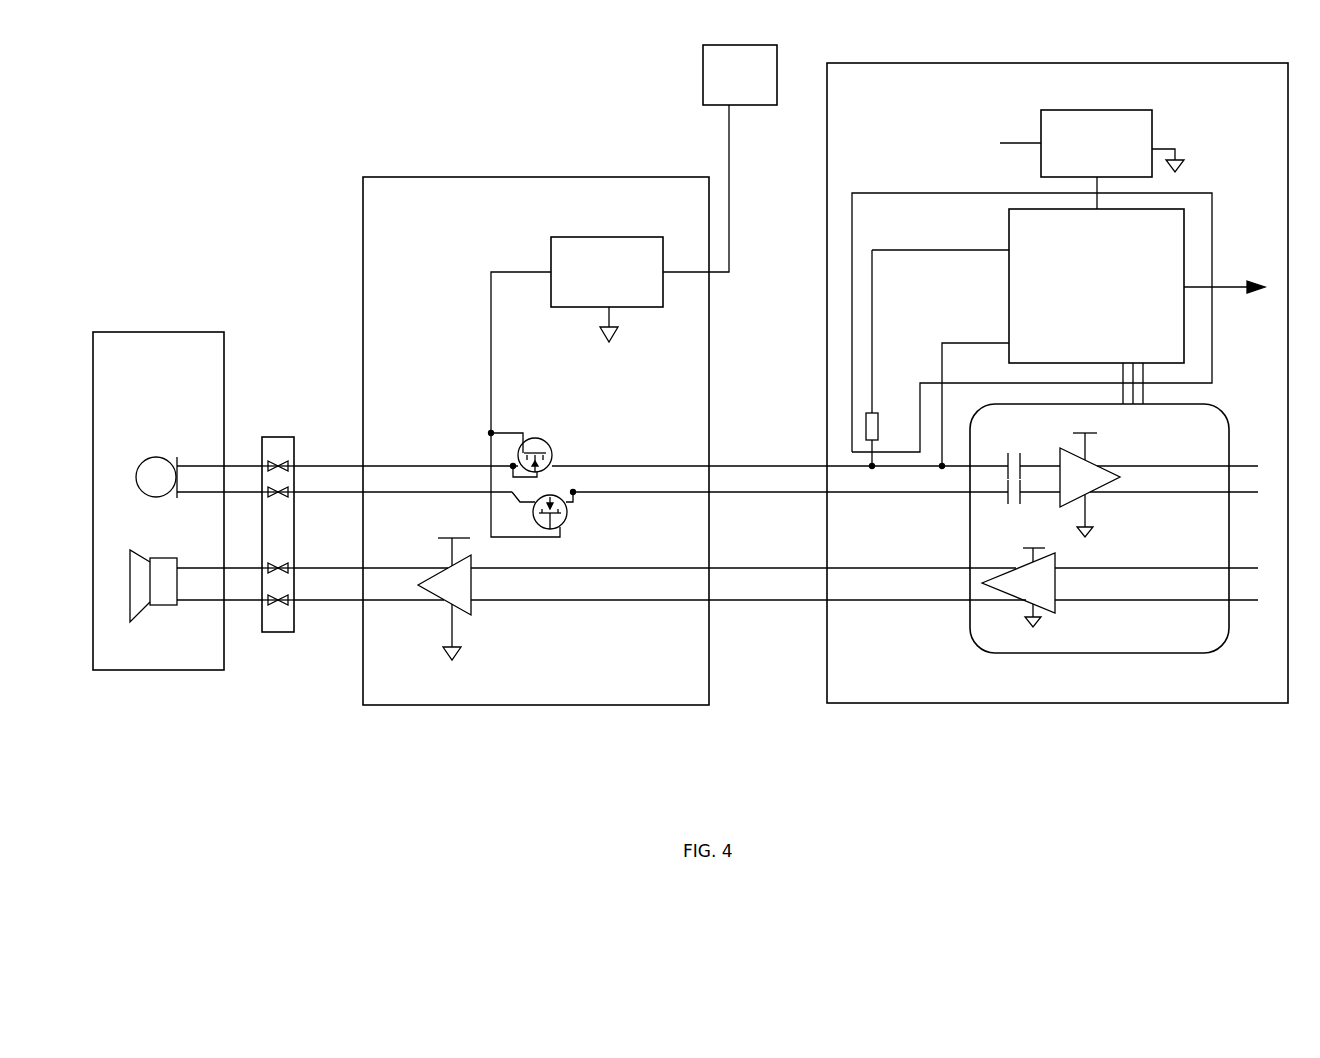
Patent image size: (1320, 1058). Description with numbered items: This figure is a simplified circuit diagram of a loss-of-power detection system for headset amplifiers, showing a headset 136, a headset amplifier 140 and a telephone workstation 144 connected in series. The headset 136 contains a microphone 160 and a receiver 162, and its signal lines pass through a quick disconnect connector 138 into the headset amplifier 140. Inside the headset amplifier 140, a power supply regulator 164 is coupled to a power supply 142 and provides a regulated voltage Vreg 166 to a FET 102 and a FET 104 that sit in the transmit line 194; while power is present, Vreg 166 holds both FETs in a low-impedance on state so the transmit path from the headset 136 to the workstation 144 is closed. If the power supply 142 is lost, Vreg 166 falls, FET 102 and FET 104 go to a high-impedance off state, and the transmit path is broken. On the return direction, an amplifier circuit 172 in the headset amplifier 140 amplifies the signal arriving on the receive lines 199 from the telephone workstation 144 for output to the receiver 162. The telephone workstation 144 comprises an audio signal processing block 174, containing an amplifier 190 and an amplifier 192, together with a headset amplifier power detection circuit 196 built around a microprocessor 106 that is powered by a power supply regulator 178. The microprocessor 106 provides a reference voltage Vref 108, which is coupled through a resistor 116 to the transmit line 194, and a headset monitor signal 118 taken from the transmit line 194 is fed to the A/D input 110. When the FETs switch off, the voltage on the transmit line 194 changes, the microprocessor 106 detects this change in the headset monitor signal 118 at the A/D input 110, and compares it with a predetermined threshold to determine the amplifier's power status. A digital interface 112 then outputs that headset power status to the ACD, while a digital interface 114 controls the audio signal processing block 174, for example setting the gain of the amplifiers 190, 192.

The headset 136 is at (158, 501).
The quick disconnect connector 138 is at (291, 507).
The headset amplifier 140 is at (536, 441).
The power supply 142 is at (720, 158).
The telephone workstation 144 is at (1057, 383).
The microphone 160 is at (197, 466).
The receiver 162 is at (191, 576).
The power supply regulator 164 is at (607, 289).
The regulated voltage Vreg 166 is at (525, 395).
The amplifier circuit 172 is at (444, 591).
The audio signal processing block 174 is at (1225, 640).
The power supply regulator 178 is at (1089, 159).
The amplifier 190 is at (1159, 479).
The amplifier 192 is at (1120, 581).
The transmit line 194 is at (651, 467).
The receiver signal line 199 is at (660, 575).
The FET 102 is at (528, 446).
The FET 104 is at (555, 515).
The microprocessor 106 is at (1096, 286).
The reference voltage Vref 108 is at (959, 324).
The A/D input 110 is at (1053, 342).
The digital interface 112 is at (1198, 295).
The digital interface 114 is at (1141, 369).
The resistor 116 is at (886, 441).
The headset monitor signal 118 is at (975, 393).
The headset amplifier power detection circuit 196 is at (900, 193).